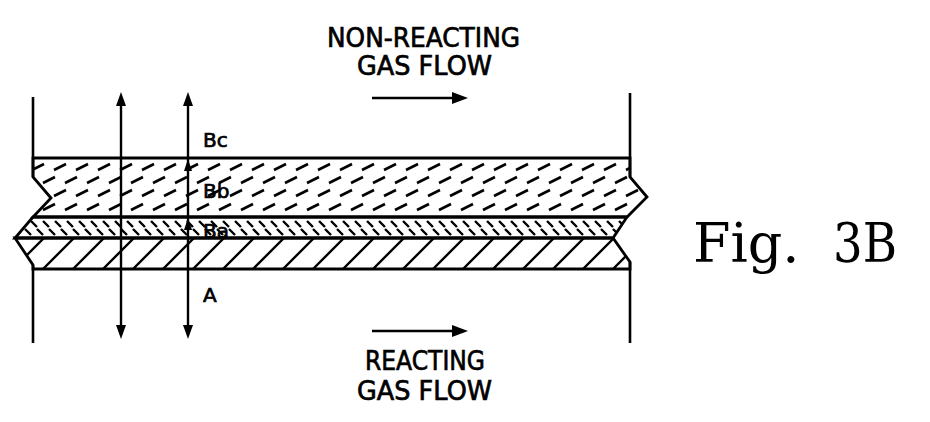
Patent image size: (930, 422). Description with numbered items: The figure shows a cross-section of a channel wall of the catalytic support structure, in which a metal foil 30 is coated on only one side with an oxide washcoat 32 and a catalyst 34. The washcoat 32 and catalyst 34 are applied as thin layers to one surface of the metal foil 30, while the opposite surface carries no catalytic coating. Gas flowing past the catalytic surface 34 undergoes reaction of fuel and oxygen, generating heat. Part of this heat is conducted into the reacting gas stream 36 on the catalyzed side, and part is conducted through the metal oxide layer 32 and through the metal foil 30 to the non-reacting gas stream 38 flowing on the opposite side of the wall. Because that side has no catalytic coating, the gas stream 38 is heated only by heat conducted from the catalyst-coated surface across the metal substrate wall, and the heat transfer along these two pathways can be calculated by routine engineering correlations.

The metal foil 30 is at (606, 170).
The oxide washcoat 32 is at (615, 228).
The catalyst 34 is at (601, 262).
The gas stream 36 is at (403, 331).
The gas stream 38 is at (403, 98).